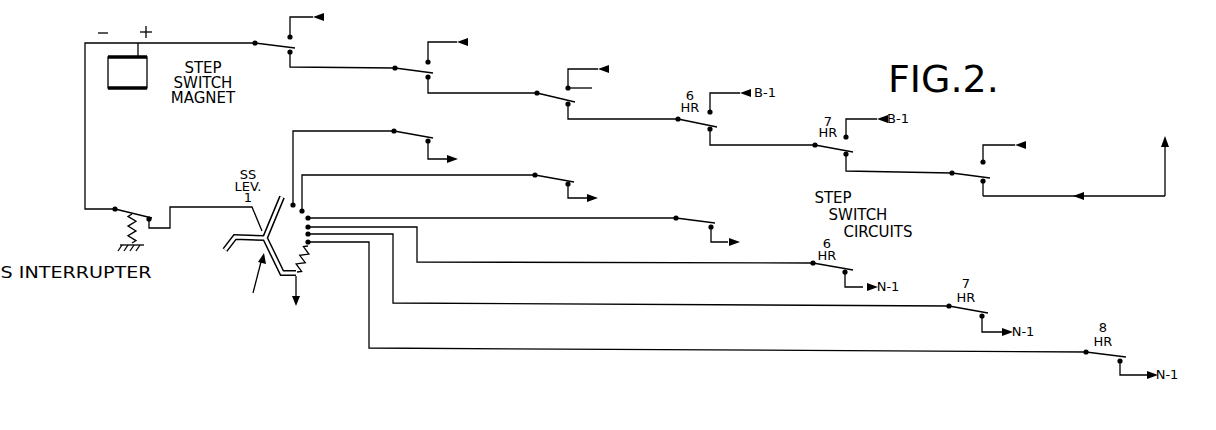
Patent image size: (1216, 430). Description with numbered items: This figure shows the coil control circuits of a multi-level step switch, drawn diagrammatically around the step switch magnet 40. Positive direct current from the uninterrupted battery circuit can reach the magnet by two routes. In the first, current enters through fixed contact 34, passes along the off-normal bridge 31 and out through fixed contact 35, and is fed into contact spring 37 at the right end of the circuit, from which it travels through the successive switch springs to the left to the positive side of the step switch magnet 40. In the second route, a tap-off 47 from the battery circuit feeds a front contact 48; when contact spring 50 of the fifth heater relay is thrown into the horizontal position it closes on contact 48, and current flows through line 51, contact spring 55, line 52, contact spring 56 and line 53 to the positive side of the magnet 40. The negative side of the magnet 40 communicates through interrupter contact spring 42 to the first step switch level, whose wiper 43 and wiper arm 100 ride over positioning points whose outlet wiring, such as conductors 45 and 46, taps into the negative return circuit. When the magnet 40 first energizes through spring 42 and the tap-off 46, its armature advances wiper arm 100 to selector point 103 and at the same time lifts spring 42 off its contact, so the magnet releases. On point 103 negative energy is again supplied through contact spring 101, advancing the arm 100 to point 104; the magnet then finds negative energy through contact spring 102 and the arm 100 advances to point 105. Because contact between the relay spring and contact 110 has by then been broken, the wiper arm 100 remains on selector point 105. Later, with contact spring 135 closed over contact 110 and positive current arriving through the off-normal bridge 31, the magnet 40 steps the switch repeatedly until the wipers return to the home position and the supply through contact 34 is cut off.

The step switch magnet 40 is at (128, 88).
The line 53 is at (188, 43).
The contact spring 56 is at (275, 49).
The line 52 is at (345, 67).
The contact spring 55 is at (413, 74).
The line 51 is at (486, 93).
The tap-off 47 is at (583, 68).
The front contact 48 is at (592, 91).
The contact spring 50 is at (553, 100).
The contact spring 37 is at (963, 178).
The fixed contact 35 is at (990, 183).
The off-normal bridge 31 is at (1164, 199).
The fixed contact 34 is at (1170, 163).
The contact spring 42 is at (139, 211).
The wiper arm 100 is at (277, 196).
The step switch wiper 43 is at (253, 282).
The contact spring 101 is at (407, 135).
The contact spring 102 is at (567, 178).
The selector point 103 is at (296, 204).
The selector point 104 is at (304, 211).
The selector point 105 is at (292, 231).
The outlet wiring 45 is at (561, 220).
The contact spring 135 is at (709, 223).
The contact 110 is at (707, 229).
The outlet wiring 46 is at (299, 292).